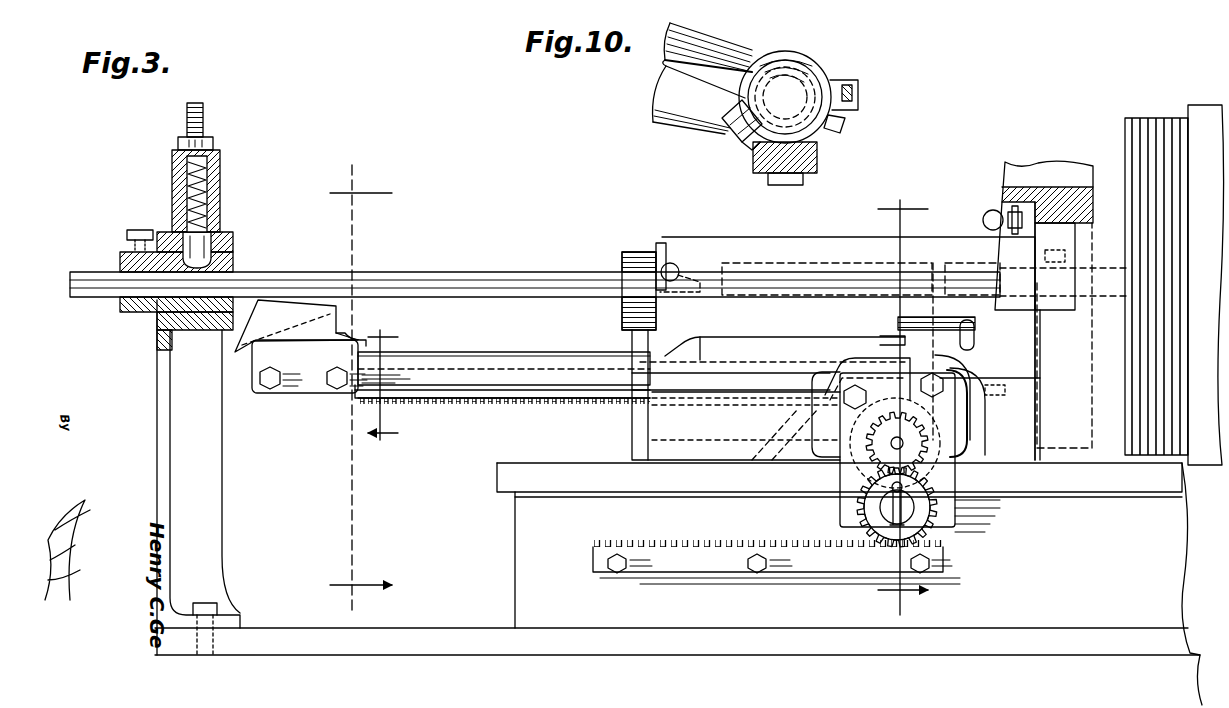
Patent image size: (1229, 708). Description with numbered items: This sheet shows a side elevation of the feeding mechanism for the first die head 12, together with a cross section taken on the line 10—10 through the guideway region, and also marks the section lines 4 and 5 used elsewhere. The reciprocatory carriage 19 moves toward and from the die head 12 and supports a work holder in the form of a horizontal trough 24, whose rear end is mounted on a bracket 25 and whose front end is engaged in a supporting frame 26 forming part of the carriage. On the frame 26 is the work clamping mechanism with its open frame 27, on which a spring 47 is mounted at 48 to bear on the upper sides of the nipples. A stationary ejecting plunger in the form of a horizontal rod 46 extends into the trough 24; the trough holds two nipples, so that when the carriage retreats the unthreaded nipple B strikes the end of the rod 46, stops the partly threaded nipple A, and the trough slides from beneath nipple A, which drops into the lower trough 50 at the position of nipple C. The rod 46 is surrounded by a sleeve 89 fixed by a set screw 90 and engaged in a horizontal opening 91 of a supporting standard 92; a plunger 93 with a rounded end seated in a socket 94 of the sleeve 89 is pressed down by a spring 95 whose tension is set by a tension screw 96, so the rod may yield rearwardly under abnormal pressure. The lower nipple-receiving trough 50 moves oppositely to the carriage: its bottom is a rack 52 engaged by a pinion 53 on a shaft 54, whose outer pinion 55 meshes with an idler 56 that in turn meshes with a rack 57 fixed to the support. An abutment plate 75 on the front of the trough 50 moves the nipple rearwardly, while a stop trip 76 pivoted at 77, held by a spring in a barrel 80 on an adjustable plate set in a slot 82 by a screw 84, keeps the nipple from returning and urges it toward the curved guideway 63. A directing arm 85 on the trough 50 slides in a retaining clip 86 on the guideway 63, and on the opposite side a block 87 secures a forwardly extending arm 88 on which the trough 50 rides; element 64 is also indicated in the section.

In FIG. 3, the first die head 12 is at (1174, 285).
In FIG. 3, the reciprocatory carriage 19 is at (756, 435).
In FIG. 3, the horizontal trough 24 is at (700, 240).
In FIG. 3, the bracket 25 is at (622, 300).
In FIG. 3, the supporting frame 26 is at (1022, 335).
In FIG. 3, the open frame 27 is at (1062, 195).
In FIG. 3, the horizontal rod 46 is at (408, 275).
In FIG. 3, the spring 47 is at (1035, 256).
In FIG. 3, the spring mounting 48 is at (983, 220).
In FIG. 3, the nipple-receiving trough 50 is at (568, 358).
In FIG. 3, the rack 52 is at (595, 405).
In FIG. 10, the rack 52 is at (780, 180).
In FIG. 3, the pinion 53 is at (858, 428).
In FIG. 3, the shaft 54 is at (890, 443).
In FIG. 3, the pinion 55 is at (882, 452).
In FIG. 3, the idler 56 is at (858, 508).
In FIG. 3, the rack 57 is at (800, 552).
In FIG. 3, the curved guideway 63 is at (300, 326).
In FIG. 10, the curved guideway 63 is at (776, 58).
In FIG. 10, the tube 64 is at (665, 62).
In FIG. 3, the abutment plate 75 is at (868, 348).
In FIG. 3, the stop trip 76 is at (978, 350).
In FIG. 3, the pivot 77 is at (975, 332).
In FIG. 3, the barrel 80 is at (898, 323).
In FIG. 3, the slot 82 is at (878, 336).
In FIG. 3, the screw 84 is at (1040, 378).
In FIG. 3, the directing arm 85 is at (348, 340).
In FIG. 10, the directing arm 85 is at (853, 96).
In FIG. 10, the retaining clip 86 is at (858, 84).
In FIG. 3, the block 87 is at (318, 354).
In FIG. 10, the block 87 is at (728, 124).
In FIG. 3, the forwardly extending arm 88 is at (455, 358).
In FIG. 3, the sleeve 89 is at (233, 262).
In FIG. 3, the set screw 90 is at (127, 236).
In FIG. 3, the horizontal opening 91 is at (188, 320).
In FIG. 3, the supporting standard 92 is at (165, 378).
In FIG. 3, the plunger 93 is at (215, 238).
In FIG. 3, the socket 94 is at (150, 300).
In FIG. 3, the spring 95 is at (172, 195).
In FIG. 3, the tension screw 96 is at (187, 120).
In FIG. 3, the nipple A is at (1023, 335).
In FIG. 3, the nipple B is at (792, 265).
In FIG. 10, the nipple B is at (792, 78).
In FIG. 3, the nipple C is at (692, 340).
In FIG. 3, the section line 4 is at (361, 382).
In FIG. 3, the section line 5 is at (903, 405).
In FIG. 3, the section line 10 is at (383, 385).